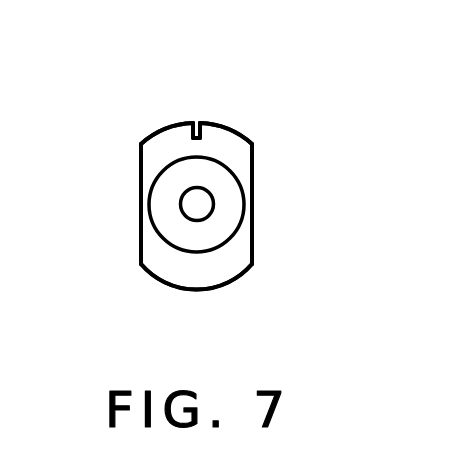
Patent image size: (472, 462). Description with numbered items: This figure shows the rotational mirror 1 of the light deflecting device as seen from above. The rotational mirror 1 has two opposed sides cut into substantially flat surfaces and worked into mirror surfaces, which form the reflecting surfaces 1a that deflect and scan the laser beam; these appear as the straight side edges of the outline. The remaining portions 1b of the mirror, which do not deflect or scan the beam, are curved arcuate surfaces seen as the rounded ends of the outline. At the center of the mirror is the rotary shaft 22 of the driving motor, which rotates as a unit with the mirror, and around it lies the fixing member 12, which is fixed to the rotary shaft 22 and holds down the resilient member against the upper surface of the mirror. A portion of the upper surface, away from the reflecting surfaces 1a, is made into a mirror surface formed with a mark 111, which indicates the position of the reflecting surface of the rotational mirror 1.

The rotational mirror 1 is at (143, 153).
The reflecting surfaces 1a is at (140, 208).
The curved portions of the rotational mirror 1b is at (242, 134).
The fixing member 12 is at (233, 210).
The rotary shaft 22 is at (196, 209).
The mark 111 is at (200, 119).